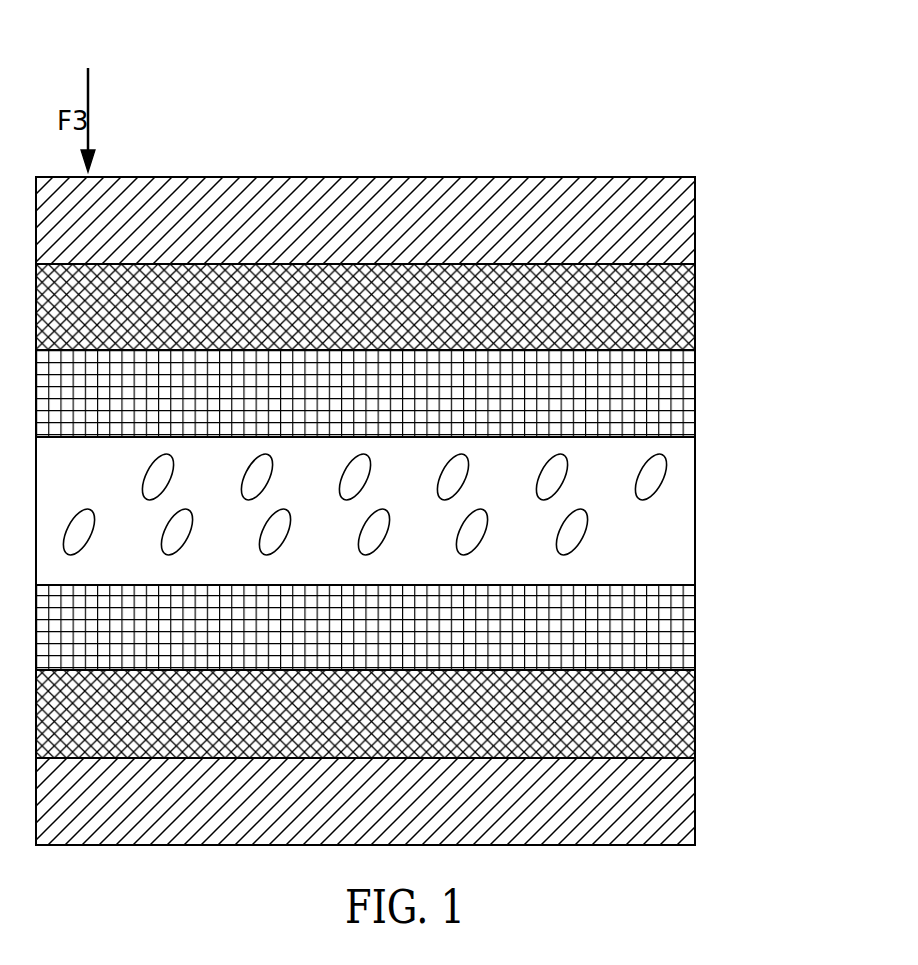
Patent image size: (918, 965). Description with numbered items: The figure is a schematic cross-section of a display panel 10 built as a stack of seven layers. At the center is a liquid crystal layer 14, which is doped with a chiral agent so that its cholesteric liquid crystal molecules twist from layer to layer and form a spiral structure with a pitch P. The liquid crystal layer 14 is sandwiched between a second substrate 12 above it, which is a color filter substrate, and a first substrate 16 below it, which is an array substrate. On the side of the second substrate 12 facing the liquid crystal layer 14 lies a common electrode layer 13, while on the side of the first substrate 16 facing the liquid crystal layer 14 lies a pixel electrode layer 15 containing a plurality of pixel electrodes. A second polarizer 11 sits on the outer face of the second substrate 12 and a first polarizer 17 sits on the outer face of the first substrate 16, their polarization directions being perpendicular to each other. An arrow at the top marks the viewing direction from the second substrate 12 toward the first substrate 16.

The display panel 10 is at (383, 97).
The second polarizer 11 is at (677, 255).
The second substrate 12 is at (670, 330).
The common electrode layer 13 is at (670, 408).
The liquid crystal layer 14 is at (678, 538).
The pixel electrode layer 15 is at (665, 645).
The first substrate 16 is at (642, 727).
The first polarizer 17 is at (665, 833).